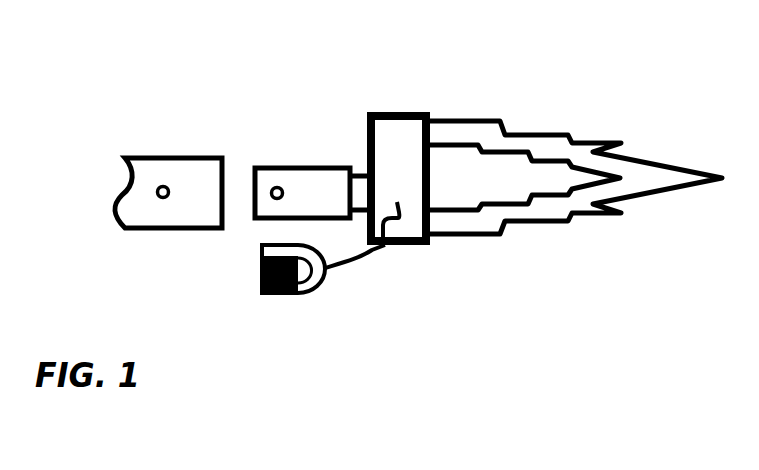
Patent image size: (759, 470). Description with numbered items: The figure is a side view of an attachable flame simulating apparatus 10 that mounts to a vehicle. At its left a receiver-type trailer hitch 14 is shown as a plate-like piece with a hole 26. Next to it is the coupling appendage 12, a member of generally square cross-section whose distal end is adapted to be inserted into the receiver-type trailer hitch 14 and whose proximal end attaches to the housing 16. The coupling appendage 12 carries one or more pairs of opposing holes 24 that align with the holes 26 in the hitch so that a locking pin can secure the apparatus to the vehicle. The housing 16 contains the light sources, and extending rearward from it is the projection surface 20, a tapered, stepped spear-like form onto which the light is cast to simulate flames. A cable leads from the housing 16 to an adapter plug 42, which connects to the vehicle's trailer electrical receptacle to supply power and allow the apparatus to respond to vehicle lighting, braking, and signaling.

The attachable flame simulating apparatus 10 is at (557, 73).
The coupling appendage 12 is at (308, 182).
The receiver-type trailer hitch 14 is at (185, 172).
The housing 16 is at (405, 190).
The projection surface 20 is at (518, 178).
The opposing holes 24 is at (271, 196).
The holes 26 is at (158, 197).
The adapter plug 42 is at (307, 270).